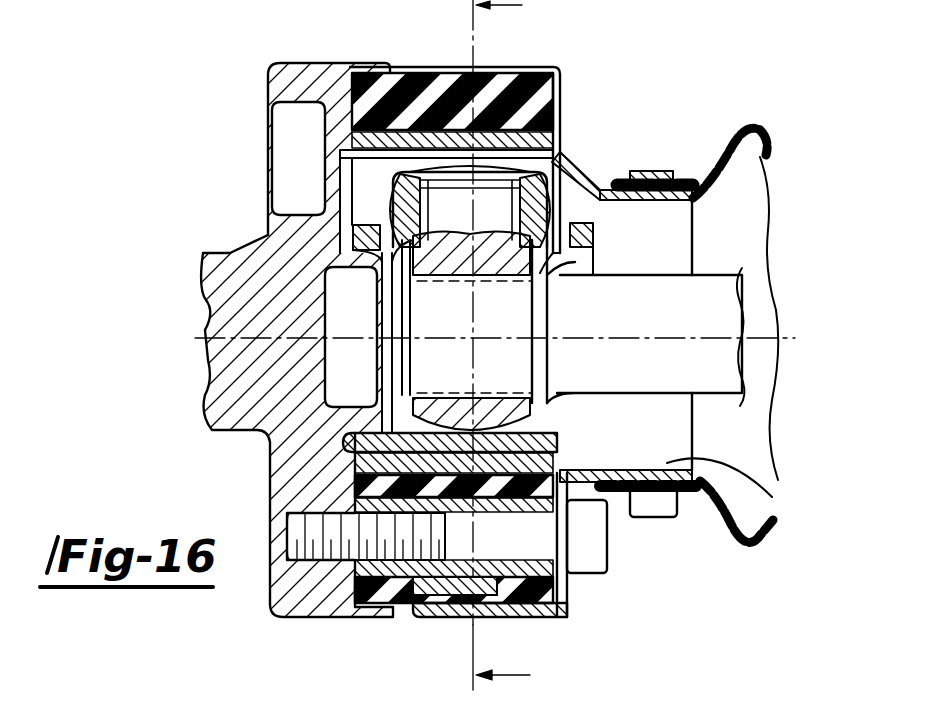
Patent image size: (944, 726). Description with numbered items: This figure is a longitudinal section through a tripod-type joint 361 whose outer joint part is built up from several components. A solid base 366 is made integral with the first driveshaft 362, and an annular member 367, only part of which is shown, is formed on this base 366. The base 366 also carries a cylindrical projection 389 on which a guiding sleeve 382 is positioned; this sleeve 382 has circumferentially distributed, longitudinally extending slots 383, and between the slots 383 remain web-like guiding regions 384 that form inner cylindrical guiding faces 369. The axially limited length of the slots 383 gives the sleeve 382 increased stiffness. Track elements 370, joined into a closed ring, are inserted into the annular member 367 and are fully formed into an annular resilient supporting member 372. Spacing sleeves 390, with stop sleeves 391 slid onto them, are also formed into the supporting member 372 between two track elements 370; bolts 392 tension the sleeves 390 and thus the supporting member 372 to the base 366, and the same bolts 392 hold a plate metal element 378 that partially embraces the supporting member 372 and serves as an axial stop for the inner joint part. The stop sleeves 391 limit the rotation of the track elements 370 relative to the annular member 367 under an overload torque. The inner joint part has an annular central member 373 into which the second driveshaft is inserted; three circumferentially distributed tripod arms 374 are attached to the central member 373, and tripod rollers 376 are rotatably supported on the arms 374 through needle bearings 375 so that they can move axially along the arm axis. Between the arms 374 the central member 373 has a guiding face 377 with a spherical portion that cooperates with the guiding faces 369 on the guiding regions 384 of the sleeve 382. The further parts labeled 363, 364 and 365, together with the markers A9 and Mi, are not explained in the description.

The constant velocity joint assembly 361 is at (250, 68).
The first driveshaft 362 is at (242, 272).
The flange member 363 is at (575, 196).
The shaft 364 is at (745, 240).
The boot 365 is at (766, 145).
The solid base 366 is at (355, 225).
The annular member 367 is at (375, 62).
The inner cylindrical guiding faces 369 is at (648, 495).
The track elements 370 is at (495, 168).
The annular resilient supporting member 372 is at (421, 113).
The annular central member 373 is at (395, 482).
The tripod arms 374 is at (520, 165).
The needle bearings 375 is at (565, 152).
The tripod rollers 376 is at (580, 168).
The guiding face 377 is at (447, 412).
The plate metal element 378 is at (720, 463).
The guiding sleeve 382 is at (342, 153).
The longitudinally extending slots 383 is at (310, 228).
The web-like guiding regions 384 is at (578, 455).
The cylindrical projection 389 is at (343, 442).
The spacing sleeves 390 is at (553, 612).
The stop sleeves 391 is at (483, 605).
The bolts 392 is at (605, 563).
The axis A9 is at (205, 302).
The pivot point Mi is at (473, 342).